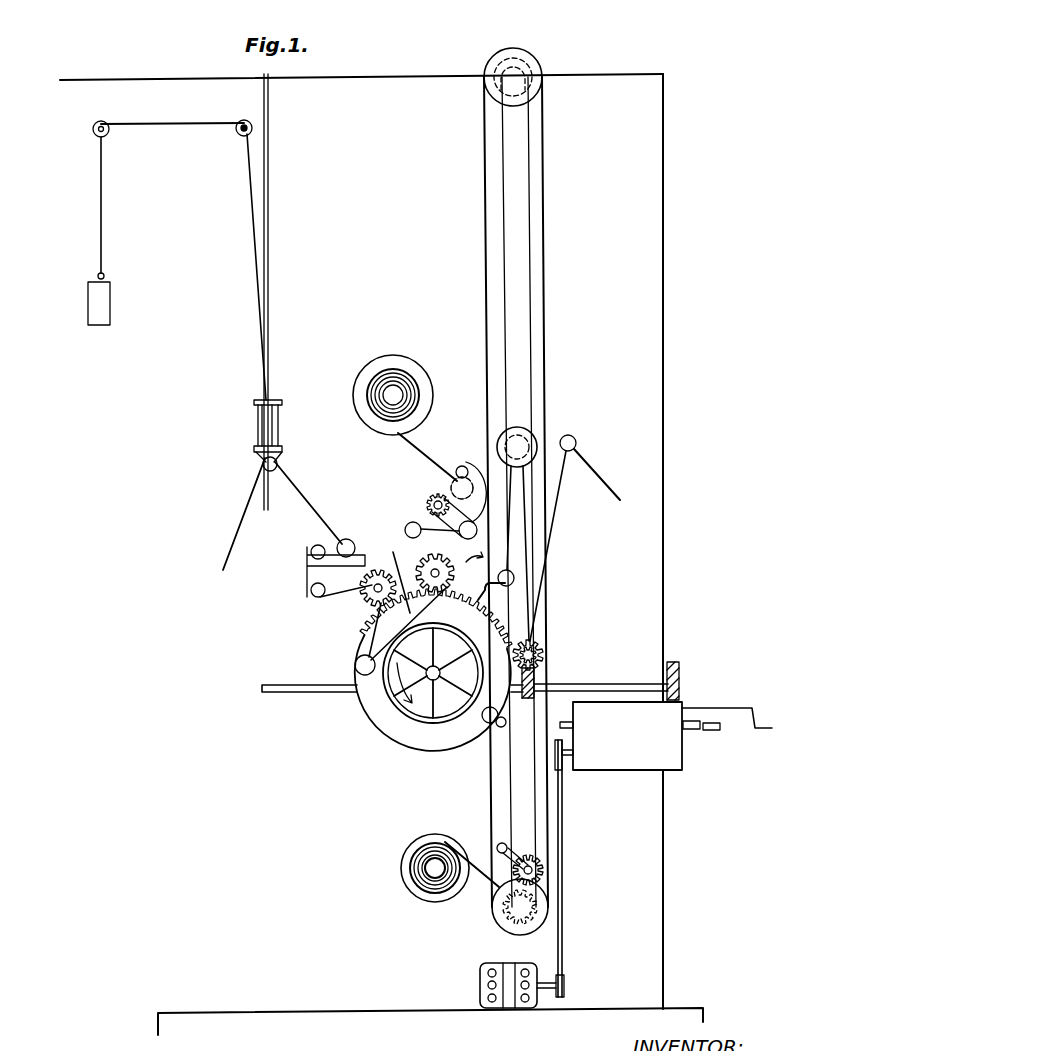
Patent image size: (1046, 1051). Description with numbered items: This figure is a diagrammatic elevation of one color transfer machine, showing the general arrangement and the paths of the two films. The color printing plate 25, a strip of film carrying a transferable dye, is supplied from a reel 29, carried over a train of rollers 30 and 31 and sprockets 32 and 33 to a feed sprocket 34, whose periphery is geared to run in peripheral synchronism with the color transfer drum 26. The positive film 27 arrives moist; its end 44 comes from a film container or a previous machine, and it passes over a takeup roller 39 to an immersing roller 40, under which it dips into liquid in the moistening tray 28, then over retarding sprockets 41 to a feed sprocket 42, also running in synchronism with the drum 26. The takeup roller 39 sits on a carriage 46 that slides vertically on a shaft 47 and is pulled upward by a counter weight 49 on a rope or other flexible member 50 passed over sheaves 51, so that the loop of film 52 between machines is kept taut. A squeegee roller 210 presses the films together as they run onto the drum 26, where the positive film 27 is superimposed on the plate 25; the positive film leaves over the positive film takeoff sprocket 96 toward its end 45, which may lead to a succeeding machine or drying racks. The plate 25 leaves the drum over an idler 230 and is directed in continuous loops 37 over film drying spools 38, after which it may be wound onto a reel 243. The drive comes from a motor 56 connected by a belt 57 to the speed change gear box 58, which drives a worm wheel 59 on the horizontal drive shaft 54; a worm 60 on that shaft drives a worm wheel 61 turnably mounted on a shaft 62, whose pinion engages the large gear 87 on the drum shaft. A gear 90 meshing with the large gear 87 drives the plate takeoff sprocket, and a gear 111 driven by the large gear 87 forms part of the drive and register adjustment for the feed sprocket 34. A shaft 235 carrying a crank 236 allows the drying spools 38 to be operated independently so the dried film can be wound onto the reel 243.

The color printing plate 25 is at (393, 553).
The color transfer drum 26 is at (377, 727).
The positive film 27 is at (380, 632).
The moistening tray 28 is at (306, 565).
The reel 29 is at (398, 362).
The roller 30 is at (452, 482).
The roller 31 is at (407, 524).
The sprocket 32 is at (428, 500).
The sprocket 33 is at (462, 465).
The feed sprocket 34 is at (452, 565).
The continuous loops 37 is at (526, 156).
The film drying spools 38 is at (518, 66).
The takeup roller 39 is at (262, 460).
The immersing roller 40 is at (338, 542).
The retarding sprockets 41 is at (310, 552).
The feed sprocket 42 is at (366, 598).
The end of the positive film 44 is at (232, 552).
The end of the positive film 45 is at (602, 470).
The carriage 46 is at (282, 425).
The shaft 47 is at (266, 208).
The counter weight 49 is at (100, 300).
The rope or other flexible member 50 is at (101, 192).
The sheaves 51 is at (240, 122).
The loop of film 52 is at (305, 485).
The drive shaft 54 is at (648, 682).
The motor 56 is at (478, 985).
The belt 57 is at (560, 932).
The speed change gear box 58 is at (668, 742).
The worm wheel 59 is at (680, 672).
The worm 60 is at (536, 680).
The worm wheel 61 is at (535, 650).
The shaft 62 is at (532, 641).
The large gear 87 is at (356, 664).
The gear 90 is at (492, 598).
The positive film takeoff sprocket 96 is at (487, 723).
The gear 111 is at (411, 547).
The squeegee roller 210 is at (360, 690).
The idler 230 is at (512, 572).
The shaft 235 is at (541, 871).
The crank 236 is at (500, 846).
The reel 243 is at (415, 886).